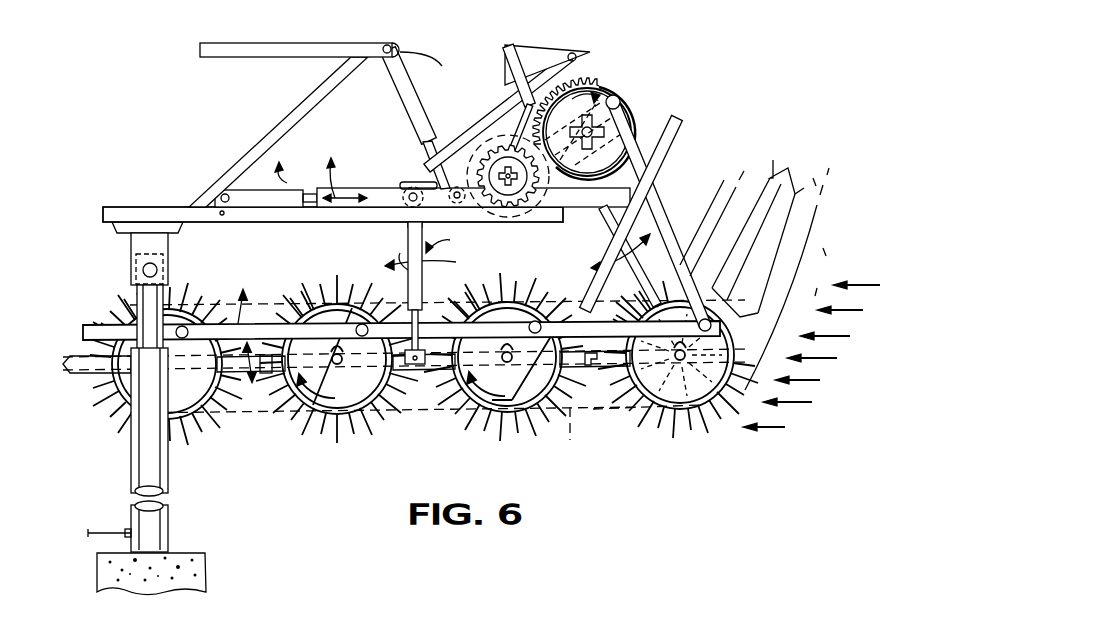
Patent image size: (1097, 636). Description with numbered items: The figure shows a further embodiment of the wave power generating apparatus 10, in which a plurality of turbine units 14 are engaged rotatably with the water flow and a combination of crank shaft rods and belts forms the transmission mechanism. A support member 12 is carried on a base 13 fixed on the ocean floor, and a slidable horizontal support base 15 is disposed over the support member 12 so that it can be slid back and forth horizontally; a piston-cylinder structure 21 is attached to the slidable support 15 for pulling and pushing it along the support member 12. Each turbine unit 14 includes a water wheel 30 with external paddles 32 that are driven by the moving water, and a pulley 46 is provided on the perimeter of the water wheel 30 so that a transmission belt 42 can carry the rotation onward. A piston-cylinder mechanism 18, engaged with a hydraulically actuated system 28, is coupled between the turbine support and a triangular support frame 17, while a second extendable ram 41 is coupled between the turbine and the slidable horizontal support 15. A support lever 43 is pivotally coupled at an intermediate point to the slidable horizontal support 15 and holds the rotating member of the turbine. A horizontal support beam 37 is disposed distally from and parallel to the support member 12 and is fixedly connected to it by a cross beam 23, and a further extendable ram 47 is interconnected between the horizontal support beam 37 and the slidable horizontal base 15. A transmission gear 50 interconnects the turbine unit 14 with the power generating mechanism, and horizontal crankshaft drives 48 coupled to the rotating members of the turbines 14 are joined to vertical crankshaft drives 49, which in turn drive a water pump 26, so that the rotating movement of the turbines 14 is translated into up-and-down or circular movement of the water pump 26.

The power generating apparatus 10 is at (648, 86).
The support member 12 is at (165, 205).
The base 13 is at (131, 462).
The turbine unit 14 is at (316, 414).
The slidable horizontal support base 15 is at (358, 198).
The triangular support frame 17 is at (537, 48).
The piston-cylinder mechanism 18 is at (131, 441).
The piston-cylinder structure 21 is at (300, 198).
The cross beam 23 is at (262, 143).
The water pump 26 is at (460, 140).
The hydraulically actuated system 28 is at (270, 207).
The water wheel 30 is at (322, 418).
The external paddles 32 is at (290, 410).
The horizontal support beam 37 is at (290, 47).
The second extendable ram 41 is at (405, 238).
The transmission belt 42 is at (300, 293).
The support lever 43 is at (651, 213).
The pulley 46 is at (597, 83).
The further extendable ram 47 is at (412, 124).
The horizontal crankshaft drive 48 is at (597, 300).
The vertical crankshaft drive 49 is at (658, 176).
The transmission gear 50 is at (510, 88).